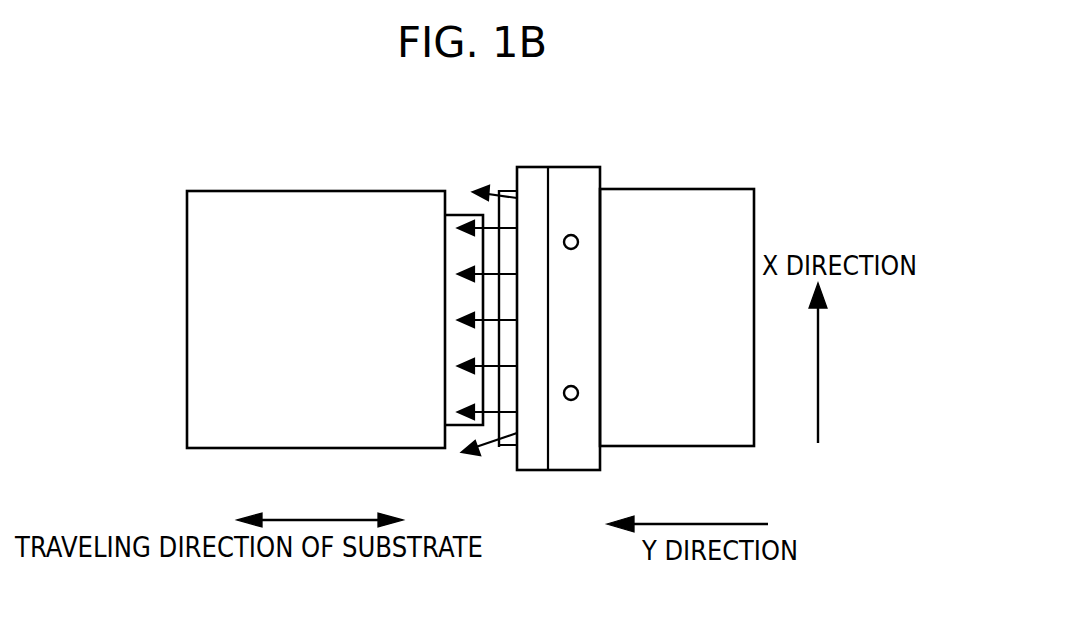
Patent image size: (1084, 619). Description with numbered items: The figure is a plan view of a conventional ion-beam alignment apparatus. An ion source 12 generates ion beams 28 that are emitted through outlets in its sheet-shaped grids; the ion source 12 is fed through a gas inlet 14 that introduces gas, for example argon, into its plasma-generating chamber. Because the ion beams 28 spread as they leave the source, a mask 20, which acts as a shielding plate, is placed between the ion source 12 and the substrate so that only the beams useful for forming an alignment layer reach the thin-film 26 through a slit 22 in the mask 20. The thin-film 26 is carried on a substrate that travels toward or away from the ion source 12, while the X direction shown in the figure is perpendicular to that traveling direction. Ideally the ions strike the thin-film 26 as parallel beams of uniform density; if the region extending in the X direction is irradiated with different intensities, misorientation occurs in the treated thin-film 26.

The ion source 12 is at (568, 172).
The gas inlet 14 is at (578, 238).
The mask 20 is at (312, 203).
The slit 22 is at (457, 196).
The thin-film 26 is at (452, 218).
The ion beams 28 is at (517, 200).